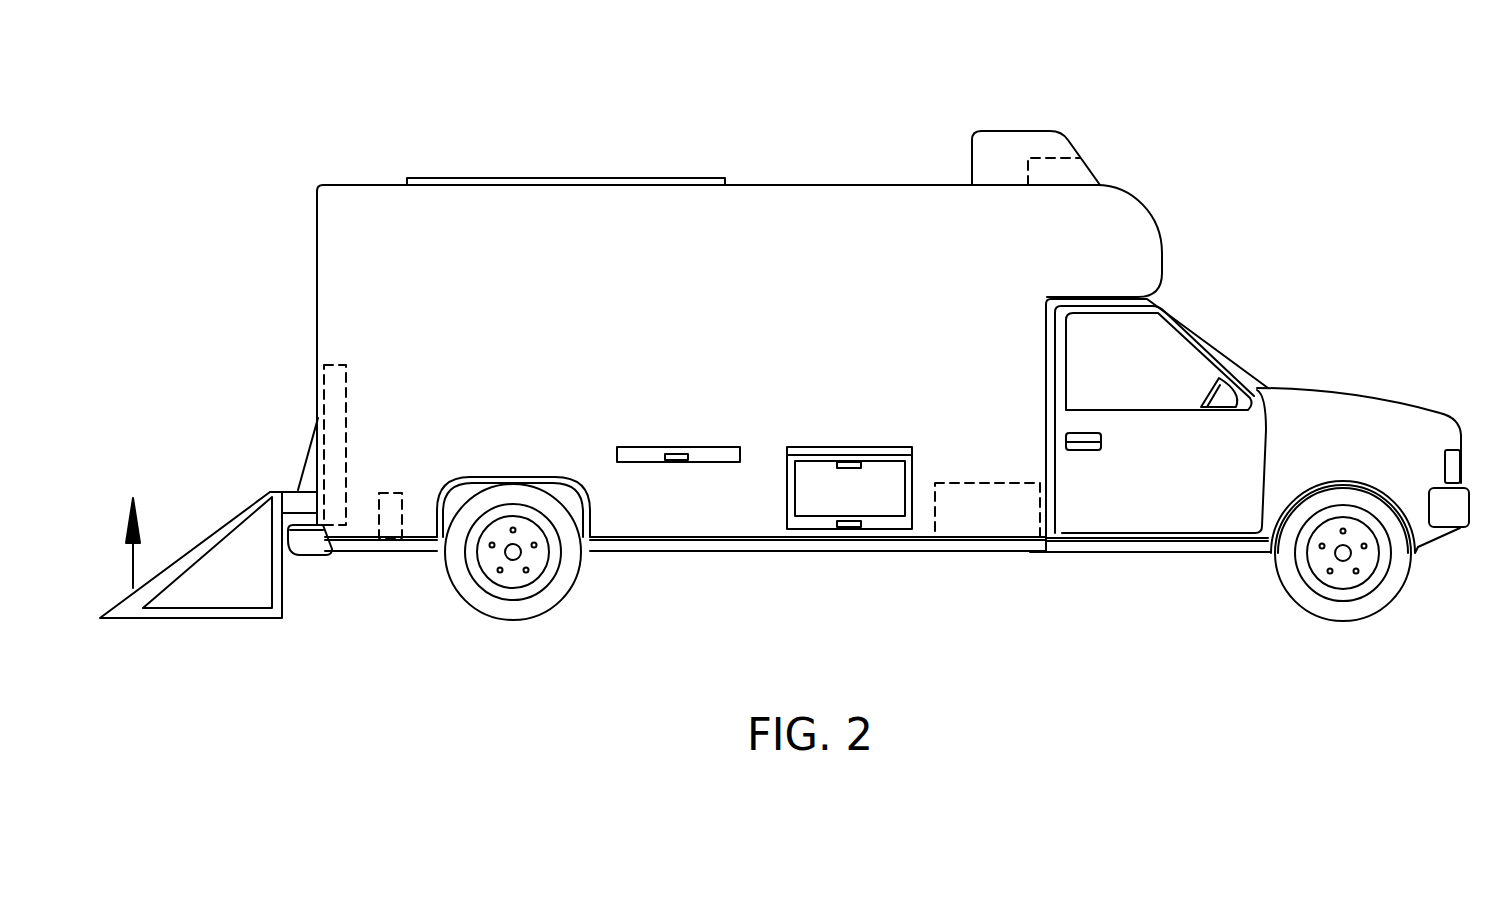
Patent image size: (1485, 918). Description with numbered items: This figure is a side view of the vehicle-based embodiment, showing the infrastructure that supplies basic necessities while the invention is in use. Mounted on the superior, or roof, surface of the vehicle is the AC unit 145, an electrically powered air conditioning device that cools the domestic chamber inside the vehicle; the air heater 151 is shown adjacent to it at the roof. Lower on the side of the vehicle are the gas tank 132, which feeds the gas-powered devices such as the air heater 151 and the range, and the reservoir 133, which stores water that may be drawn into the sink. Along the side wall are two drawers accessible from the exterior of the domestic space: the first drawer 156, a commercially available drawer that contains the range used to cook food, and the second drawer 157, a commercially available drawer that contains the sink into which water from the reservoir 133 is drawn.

The gas tank 132 is at (388, 522).
The reservoir 133 is at (987, 520).
The AC unit 145 is at (1008, 148).
The air heater 151 is at (1062, 173).
The first drawer 156 is at (712, 450).
The second drawer 157 is at (865, 497).